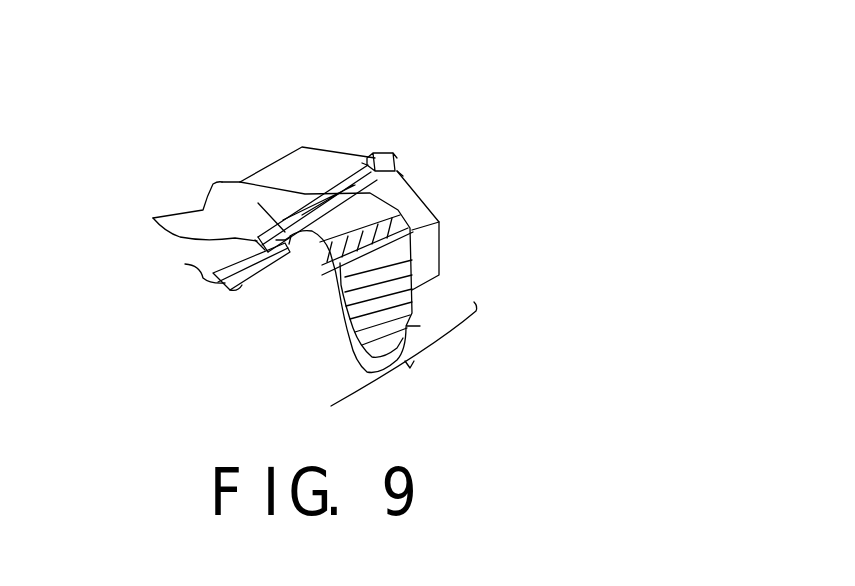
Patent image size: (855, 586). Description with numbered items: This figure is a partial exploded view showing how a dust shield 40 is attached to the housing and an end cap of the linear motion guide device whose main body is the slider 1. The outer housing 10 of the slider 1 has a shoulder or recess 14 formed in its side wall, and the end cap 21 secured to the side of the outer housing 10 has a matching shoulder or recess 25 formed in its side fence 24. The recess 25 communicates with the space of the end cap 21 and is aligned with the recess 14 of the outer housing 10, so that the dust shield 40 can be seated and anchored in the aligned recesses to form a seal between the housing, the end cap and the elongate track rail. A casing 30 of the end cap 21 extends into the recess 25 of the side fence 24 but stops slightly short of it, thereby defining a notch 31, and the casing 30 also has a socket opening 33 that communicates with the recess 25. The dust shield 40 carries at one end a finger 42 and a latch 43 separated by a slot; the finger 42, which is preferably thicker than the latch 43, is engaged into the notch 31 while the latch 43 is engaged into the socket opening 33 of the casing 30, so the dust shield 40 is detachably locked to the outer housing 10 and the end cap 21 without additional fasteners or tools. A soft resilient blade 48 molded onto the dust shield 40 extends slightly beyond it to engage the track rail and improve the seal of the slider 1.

The slider 1 is at (230, 95).
The outer housing 10 is at (160, 214).
The recess 14 is at (322, 220).
The end cap 21 is at (328, 148).
The side fence 24 is at (426, 186).
The recess 25 is at (320, 203).
The casing 30 is at (383, 157).
The notch 31 is at (400, 167).
The socket opening 33 is at (373, 157).
The dust shield 40 is at (185, 264).
The finger 42 is at (290, 252).
The latch 43 is at (260, 238).
The resilient blade 48 is at (240, 285).